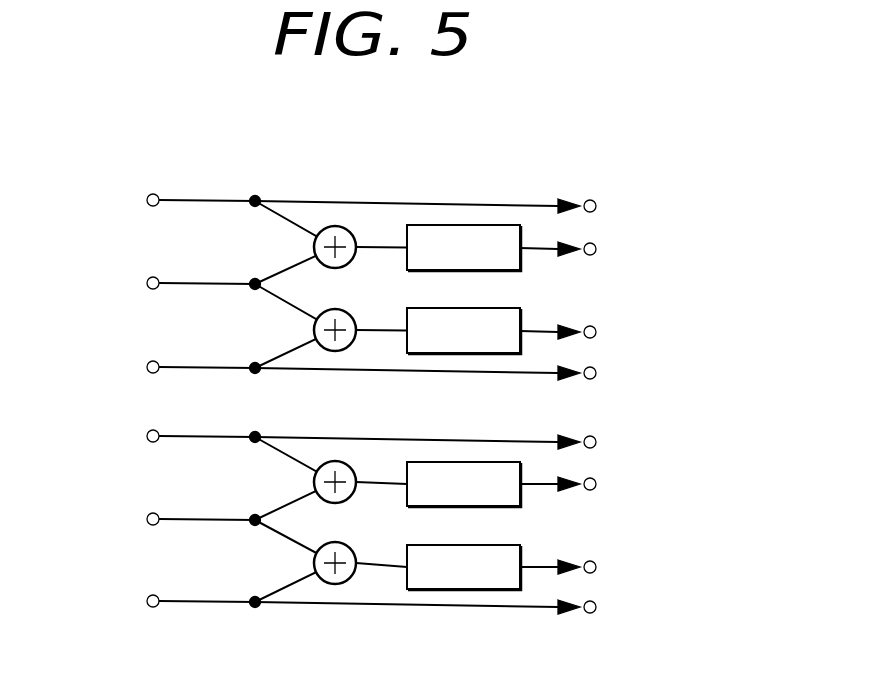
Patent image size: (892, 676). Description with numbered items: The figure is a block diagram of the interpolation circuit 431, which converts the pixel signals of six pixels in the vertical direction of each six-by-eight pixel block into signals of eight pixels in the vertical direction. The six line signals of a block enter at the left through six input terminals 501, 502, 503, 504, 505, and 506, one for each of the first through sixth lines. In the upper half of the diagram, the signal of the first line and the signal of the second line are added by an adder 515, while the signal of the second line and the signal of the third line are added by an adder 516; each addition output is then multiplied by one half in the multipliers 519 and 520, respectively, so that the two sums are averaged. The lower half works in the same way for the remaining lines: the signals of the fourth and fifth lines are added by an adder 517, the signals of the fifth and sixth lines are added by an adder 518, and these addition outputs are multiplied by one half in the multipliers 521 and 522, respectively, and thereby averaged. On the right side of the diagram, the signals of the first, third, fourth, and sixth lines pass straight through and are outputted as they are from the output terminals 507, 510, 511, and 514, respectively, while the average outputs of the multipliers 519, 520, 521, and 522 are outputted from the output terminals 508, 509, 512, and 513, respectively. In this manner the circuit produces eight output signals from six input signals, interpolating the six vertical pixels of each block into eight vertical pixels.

The interpolation circuit 431 is at (380, 117).
The input terminal 501 is at (147, 200).
The input terminal 502 is at (147, 283).
The input terminal 503 is at (147, 367).
The input terminal 504 is at (147, 436).
The input terminal 505 is at (147, 519).
The input terminal 506 is at (147, 601).
The output terminal 507 is at (597, 206).
The output terminal 508 is at (597, 249).
The output terminal 509 is at (597, 332).
The output terminal 510 is at (597, 373).
The output terminal 511 is at (597, 442).
The output terminal 512 is at (597, 484).
The output terminal 513 is at (597, 567).
The output terminal 514 is at (597, 607).
The adder 515 is at (340, 226).
The adder 516 is at (325, 352).
The adder 517 is at (340, 462).
The adder 518 is at (323, 586).
The multiplier 519 is at (522, 235).
The multiplier 520 is at (522, 314).
The multiplier 521 is at (522, 472).
The multiplier 522 is at (522, 548).